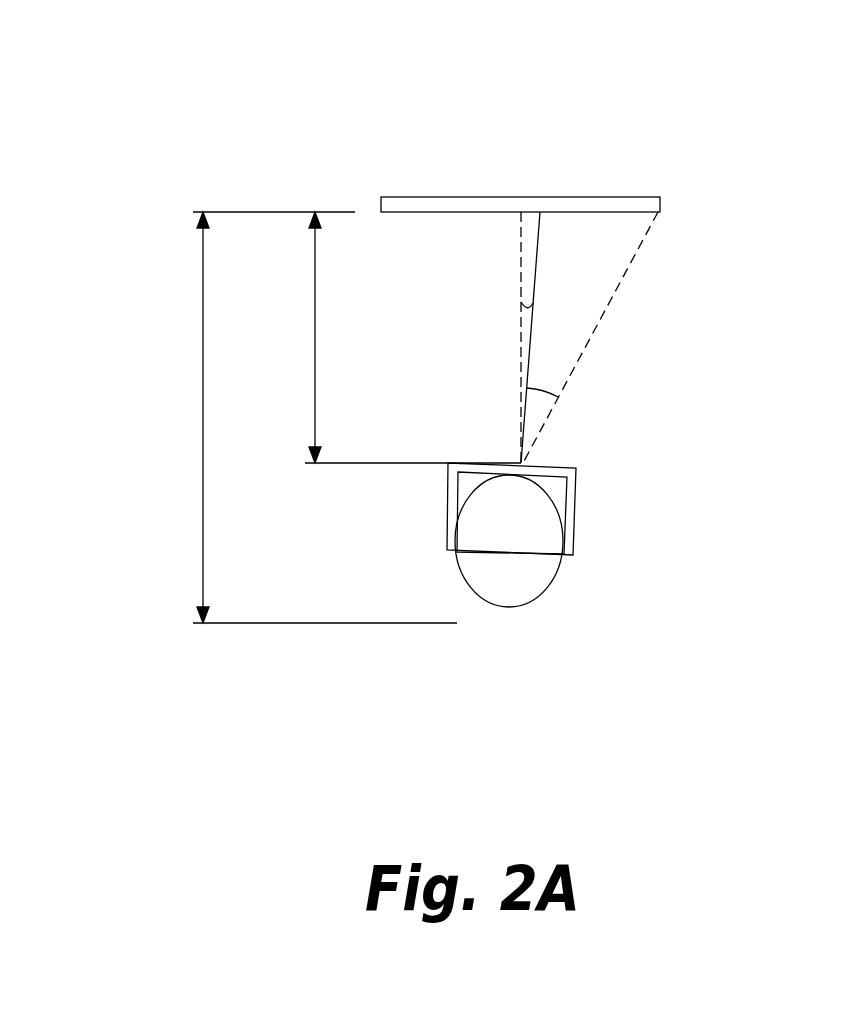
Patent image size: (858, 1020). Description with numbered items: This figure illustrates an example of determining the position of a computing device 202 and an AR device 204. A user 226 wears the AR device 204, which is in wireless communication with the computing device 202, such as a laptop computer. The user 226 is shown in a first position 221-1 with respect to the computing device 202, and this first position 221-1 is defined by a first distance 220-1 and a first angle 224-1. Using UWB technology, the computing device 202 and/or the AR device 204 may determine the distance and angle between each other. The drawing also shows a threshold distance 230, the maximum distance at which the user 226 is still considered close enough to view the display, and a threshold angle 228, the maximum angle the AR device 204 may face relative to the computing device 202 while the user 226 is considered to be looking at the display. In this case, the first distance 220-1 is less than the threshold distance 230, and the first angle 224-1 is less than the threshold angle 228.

The computing device 202 is at (473, 197).
The first position 221-1 is at (527, 97).
The first angle 224-1 is at (521, 298).
The threshold angle 228 is at (562, 383).
The first distance 220-1 is at (357, 337).
The threshold distance 230 is at (270, 417).
The AR device 204 is at (575, 497).
The user 226 is at (560, 583).